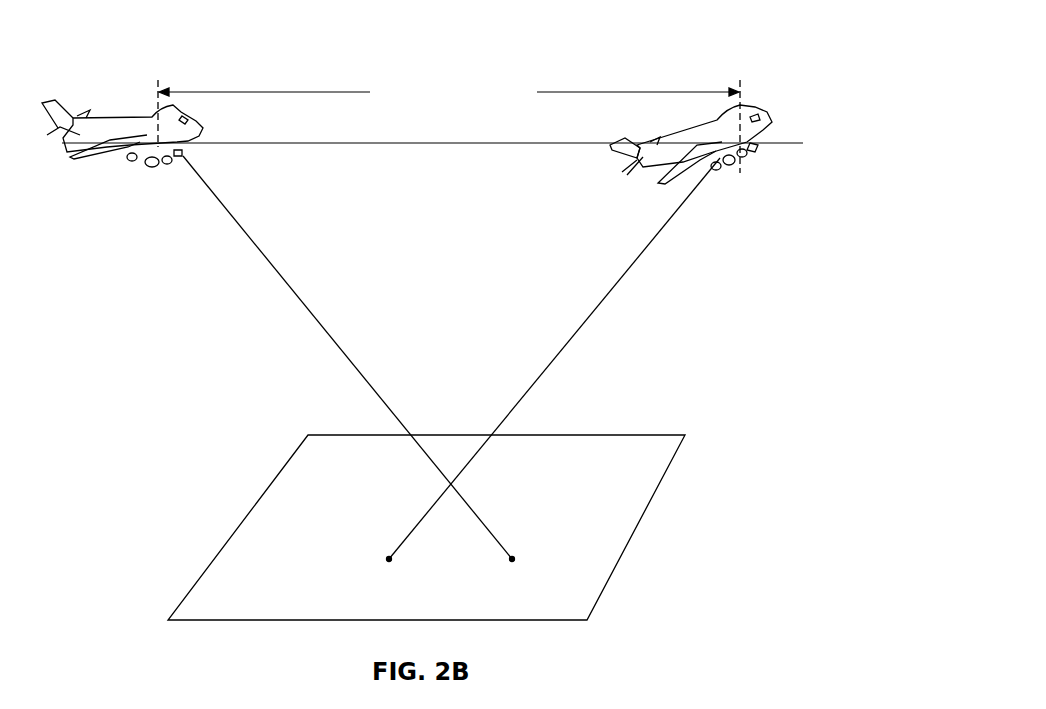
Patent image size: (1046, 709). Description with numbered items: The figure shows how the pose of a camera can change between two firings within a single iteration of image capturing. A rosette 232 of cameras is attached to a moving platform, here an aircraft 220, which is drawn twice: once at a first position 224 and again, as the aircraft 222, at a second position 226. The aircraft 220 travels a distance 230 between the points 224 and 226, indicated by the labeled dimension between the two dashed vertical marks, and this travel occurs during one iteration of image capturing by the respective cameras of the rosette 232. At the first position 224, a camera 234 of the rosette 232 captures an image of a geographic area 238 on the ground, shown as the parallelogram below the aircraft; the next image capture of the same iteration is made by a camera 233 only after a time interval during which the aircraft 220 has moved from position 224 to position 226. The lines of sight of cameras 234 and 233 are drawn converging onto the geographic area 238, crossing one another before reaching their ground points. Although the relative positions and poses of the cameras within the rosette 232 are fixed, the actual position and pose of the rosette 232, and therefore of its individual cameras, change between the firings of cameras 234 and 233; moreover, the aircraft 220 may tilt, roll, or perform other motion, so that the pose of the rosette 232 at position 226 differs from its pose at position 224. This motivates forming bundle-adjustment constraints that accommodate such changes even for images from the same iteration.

The aircraft 220 is at (67, 154).
The aircraft at second firing position 222 is at (780, 144).
The position 224 is at (160, 84).
The position 226 is at (742, 86).
The distance 230 is at (615, 92).
The rosette 232 is at (140, 165).
The camera 233 is at (683, 190).
The camera 234 is at (186, 152).
The geographic area 238 is at (653, 500).